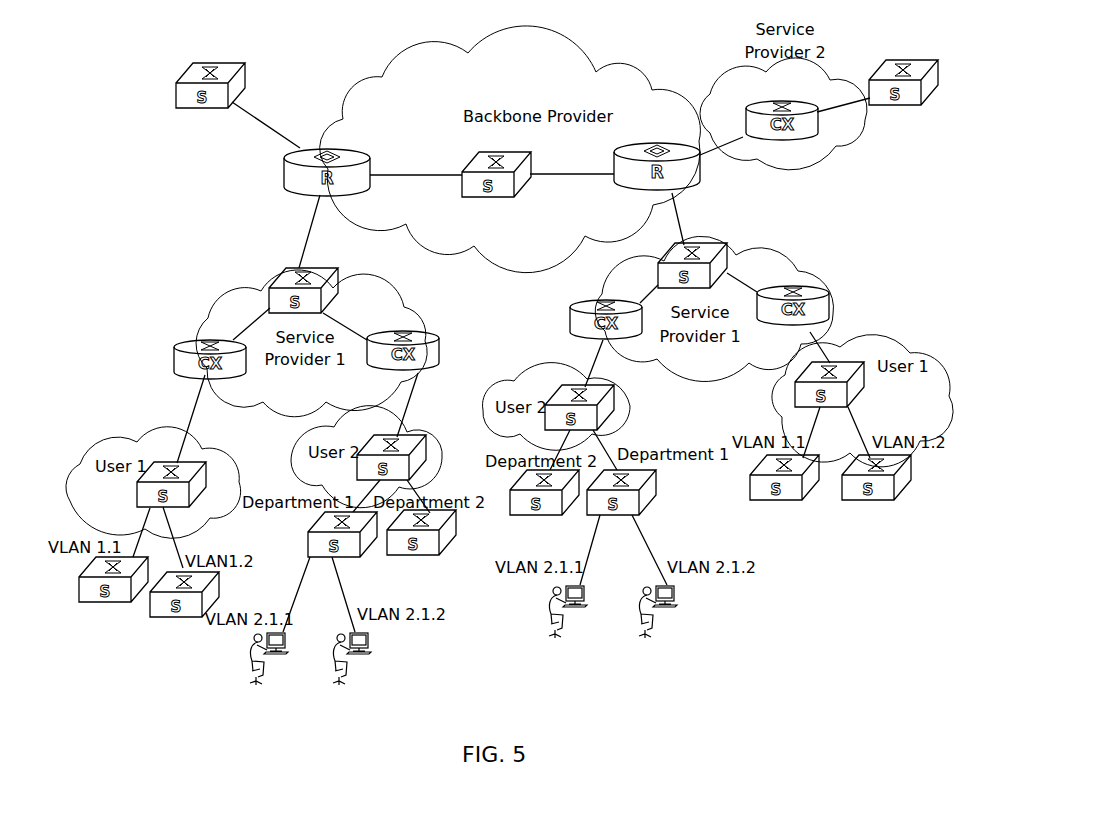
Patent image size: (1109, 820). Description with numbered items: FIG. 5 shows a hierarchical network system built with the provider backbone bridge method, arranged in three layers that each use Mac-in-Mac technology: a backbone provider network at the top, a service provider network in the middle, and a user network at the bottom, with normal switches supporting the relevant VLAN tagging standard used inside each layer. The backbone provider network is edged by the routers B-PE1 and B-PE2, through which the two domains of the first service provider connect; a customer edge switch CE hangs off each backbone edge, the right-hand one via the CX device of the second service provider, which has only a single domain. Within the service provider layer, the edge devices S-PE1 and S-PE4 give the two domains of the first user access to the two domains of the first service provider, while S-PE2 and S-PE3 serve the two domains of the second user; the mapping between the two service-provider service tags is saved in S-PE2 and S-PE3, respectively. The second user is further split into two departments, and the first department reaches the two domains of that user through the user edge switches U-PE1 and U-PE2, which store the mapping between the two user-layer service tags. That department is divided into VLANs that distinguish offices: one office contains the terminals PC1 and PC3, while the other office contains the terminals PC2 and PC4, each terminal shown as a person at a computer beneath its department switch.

The customer edge switch CE is at (557, 95).
The edge device of the backbone provider network B-PE1 is at (296, 172).
The edge device of the backbone provider network B-PE2 is at (684, 168).
The edge device of the service provider network S-PE1 is at (179, 359).
The edge device of the service provider network S-PE2 is at (430, 350).
The edge device of the service provider network S-PE3 is at (578, 319).
The edge device of the service provider network S-PE4 is at (821, 305).
The service provider 2 CX device CX is at (782, 120).
The edge device of the user network U-PE1 is at (420, 457).
The edge device of the user network U-PE2 is at (612, 407).
The terminal PC1 is at (269, 672).
The terminal PC2 is at (347, 672).
The terminal PC3 is at (562, 624).
The terminal PC4 is at (651, 622).